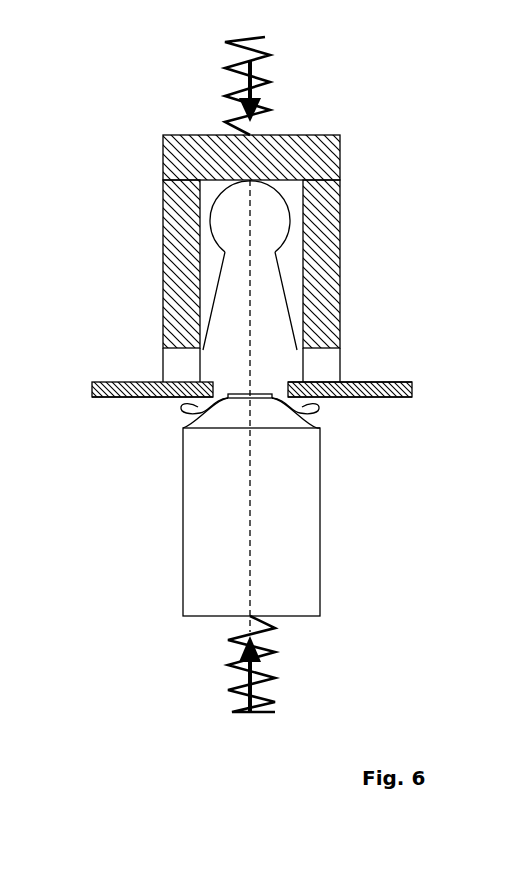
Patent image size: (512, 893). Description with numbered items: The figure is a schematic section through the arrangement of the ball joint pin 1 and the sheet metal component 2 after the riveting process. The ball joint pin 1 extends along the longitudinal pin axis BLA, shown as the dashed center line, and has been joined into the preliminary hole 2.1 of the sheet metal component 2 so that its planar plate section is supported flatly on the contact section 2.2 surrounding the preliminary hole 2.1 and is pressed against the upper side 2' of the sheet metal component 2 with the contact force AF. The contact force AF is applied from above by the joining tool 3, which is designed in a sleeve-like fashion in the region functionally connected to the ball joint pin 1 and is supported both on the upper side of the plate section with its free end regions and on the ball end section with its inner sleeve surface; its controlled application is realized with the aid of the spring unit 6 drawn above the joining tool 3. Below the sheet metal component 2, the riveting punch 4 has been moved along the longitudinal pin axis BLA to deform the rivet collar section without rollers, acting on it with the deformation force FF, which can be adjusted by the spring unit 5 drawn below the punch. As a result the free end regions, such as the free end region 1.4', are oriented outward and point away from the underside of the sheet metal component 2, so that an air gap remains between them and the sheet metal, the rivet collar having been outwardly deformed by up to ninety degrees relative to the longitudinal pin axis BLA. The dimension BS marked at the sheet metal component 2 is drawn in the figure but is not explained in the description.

The ball joint pin 1 is at (286, 189).
The sheet metal component 2 is at (280, 345).
The upper side of the sheet metal component 2' is at (350, 345).
The preliminary hole 2.1 is at (327, 432).
The contact section 2.2 is at (172, 398).
The joining tool 3 is at (162, 235).
The riveting punch 4 is at (305, 550).
The spring unit 5 is at (230, 685).
The spring unit 6 is at (225, 76).
The free end region of the rivet collar section 1.4' is at (183, 461).
The plate thickness BS is at (92, 362).
The longitudinal pin axis BLA is at (250, 528).
The contact force AF is at (350, 58).
The deformation force FF is at (293, 748).